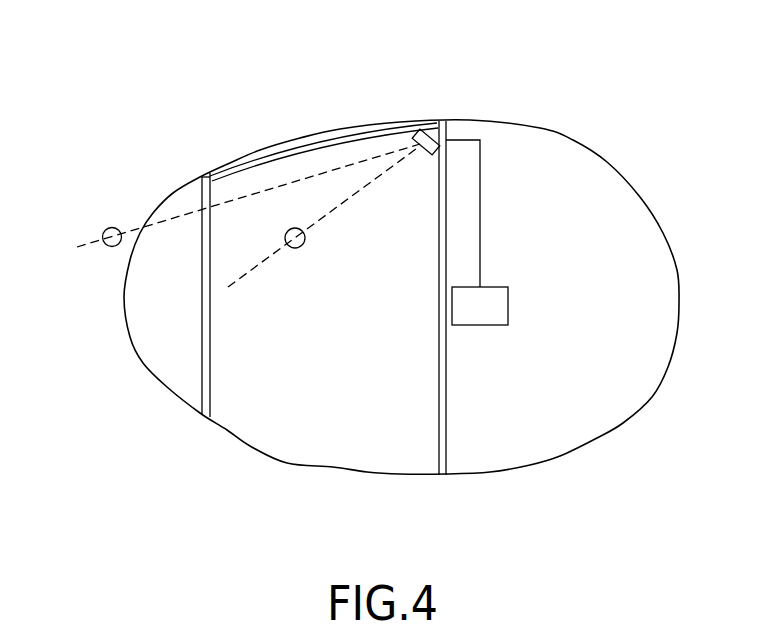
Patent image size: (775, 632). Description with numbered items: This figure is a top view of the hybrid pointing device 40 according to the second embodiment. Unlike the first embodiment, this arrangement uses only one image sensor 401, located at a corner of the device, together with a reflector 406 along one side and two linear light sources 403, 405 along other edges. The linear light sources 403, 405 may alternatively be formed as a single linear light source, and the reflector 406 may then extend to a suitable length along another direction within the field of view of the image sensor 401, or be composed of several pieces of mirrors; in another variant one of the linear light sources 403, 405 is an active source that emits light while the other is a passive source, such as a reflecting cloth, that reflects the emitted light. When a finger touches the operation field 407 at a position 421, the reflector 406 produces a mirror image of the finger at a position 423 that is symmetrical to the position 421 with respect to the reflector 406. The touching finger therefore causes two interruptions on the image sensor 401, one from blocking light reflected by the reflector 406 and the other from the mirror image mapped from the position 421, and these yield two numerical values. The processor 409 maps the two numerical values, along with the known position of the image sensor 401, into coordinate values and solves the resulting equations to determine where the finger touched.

The hybrid pointing device 40 is at (703, 120).
The image sensor 401 is at (427, 120).
The linear light source 403 is at (445, 424).
The linear light source 405 is at (383, 130).
The reflector 406 is at (205, 317).
The operation field 407 is at (312, 408).
The processor 409 is at (508, 298).
The position 421 is at (305, 243).
The position 423 is at (105, 230).